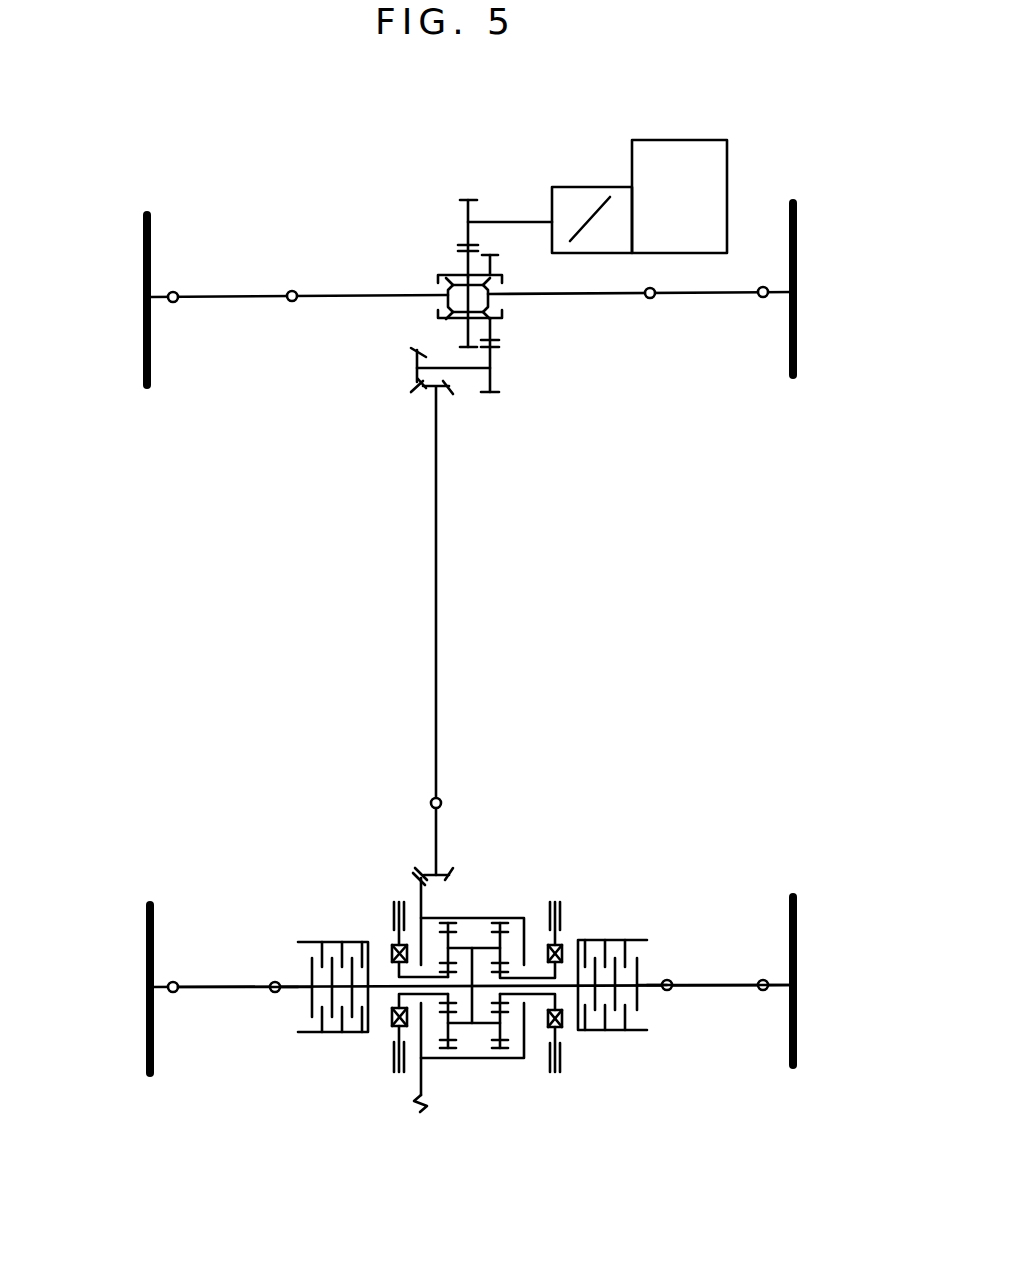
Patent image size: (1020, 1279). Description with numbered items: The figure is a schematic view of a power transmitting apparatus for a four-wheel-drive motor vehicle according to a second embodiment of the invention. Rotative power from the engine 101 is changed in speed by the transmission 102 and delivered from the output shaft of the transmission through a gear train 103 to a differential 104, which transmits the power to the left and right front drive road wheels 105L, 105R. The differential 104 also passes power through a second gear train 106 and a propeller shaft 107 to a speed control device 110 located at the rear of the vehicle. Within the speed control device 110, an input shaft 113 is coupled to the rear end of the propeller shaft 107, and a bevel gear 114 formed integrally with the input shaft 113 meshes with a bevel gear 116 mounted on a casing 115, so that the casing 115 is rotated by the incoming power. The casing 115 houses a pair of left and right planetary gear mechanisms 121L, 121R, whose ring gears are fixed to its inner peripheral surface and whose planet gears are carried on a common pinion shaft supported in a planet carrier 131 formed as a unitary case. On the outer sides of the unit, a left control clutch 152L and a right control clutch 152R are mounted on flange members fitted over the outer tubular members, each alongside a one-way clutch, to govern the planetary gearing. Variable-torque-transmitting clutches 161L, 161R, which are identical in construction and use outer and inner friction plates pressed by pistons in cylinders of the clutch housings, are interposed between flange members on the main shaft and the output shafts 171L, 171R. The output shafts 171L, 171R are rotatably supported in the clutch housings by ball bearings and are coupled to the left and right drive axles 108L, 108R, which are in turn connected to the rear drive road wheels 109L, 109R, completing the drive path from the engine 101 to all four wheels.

The engine 101 is at (683, 138).
The transmission 102 is at (592, 187).
The gear train 103 is at (452, 206).
The differential 104 is at (420, 312).
The left front drive road wheel 105L is at (145, 356).
The right front drive road wheel 105R is at (795, 362).
The gear train 106 is at (490, 399).
The propeller shaft 107 is at (437, 585).
The left drive axle 108L is at (220, 996).
The right drive axle 108R is at (718, 985).
The left rear drive road wheel 109L is at (146, 1063).
The right rear drive road wheel 109R is at (795, 1047).
The speed control device 110 is at (542, 868).
The input shaft 113 is at (432, 842).
The bevel gear 114 is at (448, 868).
The casing 115 is at (488, 1060).
The bevel gear 116 is at (420, 1114).
The left planetary gear mechanism 121L is at (455, 918).
The right planetary gear mechanism 121R is at (512, 1060).
The planet carrier 131 is at (468, 1060).
The left control clutch 152L is at (395, 1070).
The right control clutch 152R is at (558, 903).
The left variable-torque-transmitting clutch 161L is at (318, 938).
The right variable-torque-transmitting clutch 161R is at (610, 1040).
The left output shaft 171L is at (295, 996).
The right output shaft 171R is at (645, 978).